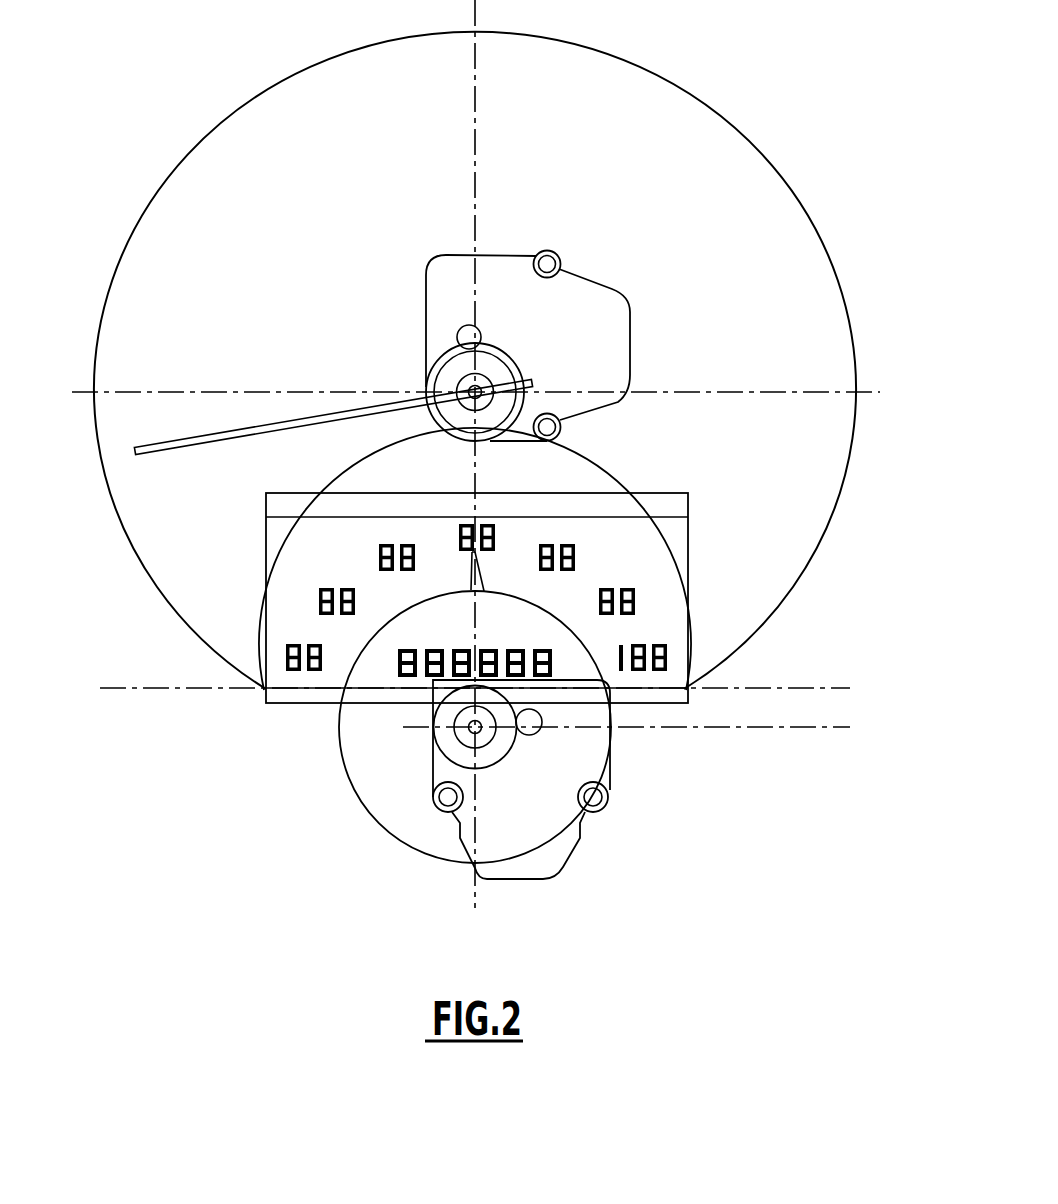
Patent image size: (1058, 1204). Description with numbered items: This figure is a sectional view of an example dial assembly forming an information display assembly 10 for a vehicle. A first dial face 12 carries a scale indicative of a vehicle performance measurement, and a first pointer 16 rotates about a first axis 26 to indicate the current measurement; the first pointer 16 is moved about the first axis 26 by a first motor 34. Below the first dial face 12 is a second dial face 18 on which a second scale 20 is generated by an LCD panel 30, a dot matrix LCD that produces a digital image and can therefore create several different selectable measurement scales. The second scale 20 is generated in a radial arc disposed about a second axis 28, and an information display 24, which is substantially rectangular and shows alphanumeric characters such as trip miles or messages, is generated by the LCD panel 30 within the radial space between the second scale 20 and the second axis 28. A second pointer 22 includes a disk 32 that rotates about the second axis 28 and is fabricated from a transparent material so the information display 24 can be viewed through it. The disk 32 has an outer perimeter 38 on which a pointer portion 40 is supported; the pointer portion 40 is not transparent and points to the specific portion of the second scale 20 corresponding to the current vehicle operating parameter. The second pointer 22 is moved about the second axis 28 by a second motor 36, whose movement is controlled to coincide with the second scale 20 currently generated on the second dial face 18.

The information display assembly 10 is at (838, 101).
The first dial face 12 is at (802, 252).
The first pointer 16 is at (221, 439).
The second dial face 18 is at (310, 626).
The second scale 20 is at (622, 587).
The second pointer 22 is at (535, 588).
The information display 24 is at (570, 668).
The first axis 26 is at (483, 385).
The second axis 28 is at (463, 732).
The LCD panel 30 is at (287, 571).
The disk 32 is at (425, 835).
The first motor 34 is at (503, 376).
The second motor 36 is at (497, 750).
The outer perimeter 38 is at (360, 822).
The pointer portion 40 is at (464, 593).